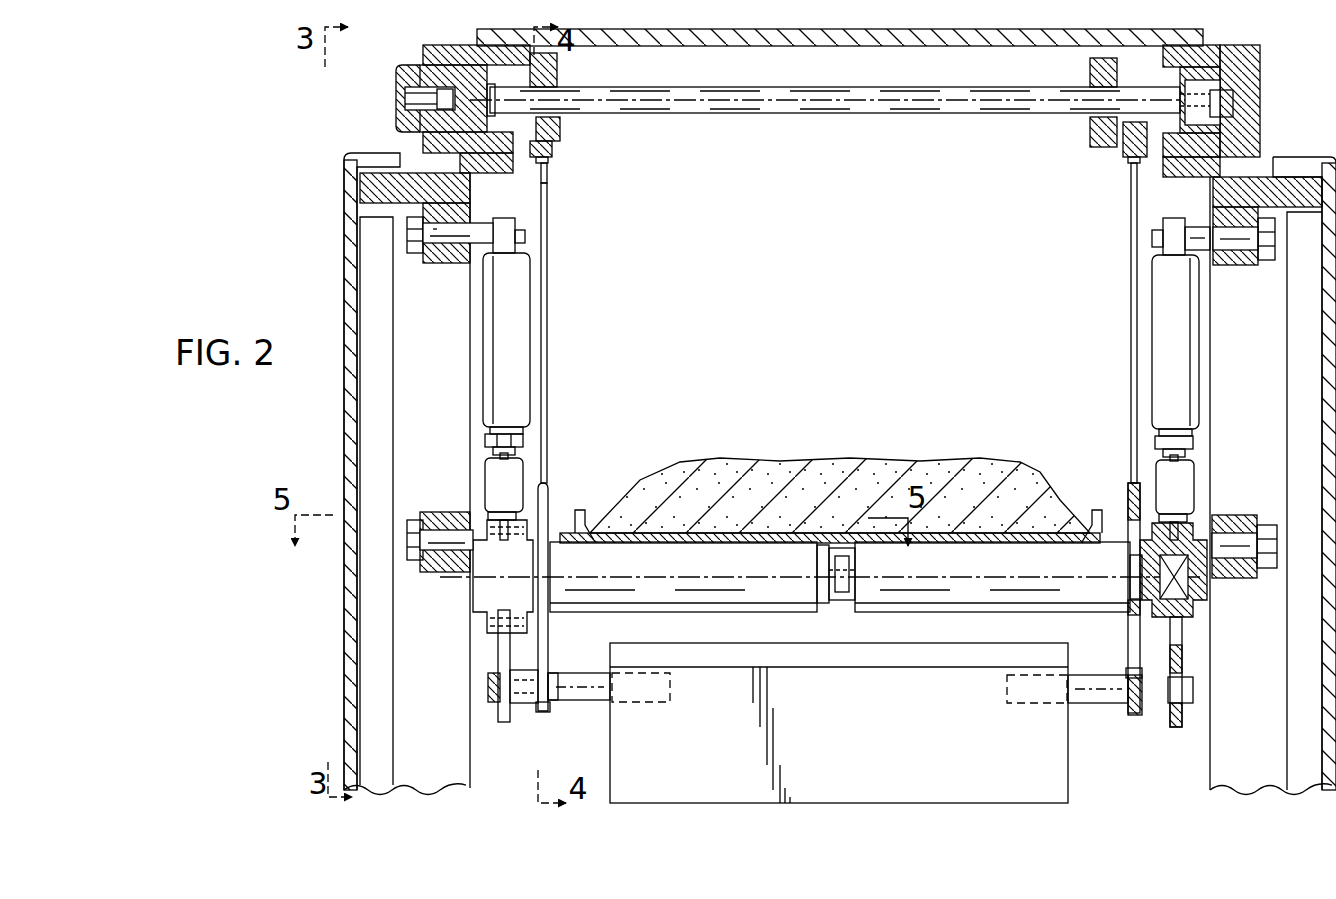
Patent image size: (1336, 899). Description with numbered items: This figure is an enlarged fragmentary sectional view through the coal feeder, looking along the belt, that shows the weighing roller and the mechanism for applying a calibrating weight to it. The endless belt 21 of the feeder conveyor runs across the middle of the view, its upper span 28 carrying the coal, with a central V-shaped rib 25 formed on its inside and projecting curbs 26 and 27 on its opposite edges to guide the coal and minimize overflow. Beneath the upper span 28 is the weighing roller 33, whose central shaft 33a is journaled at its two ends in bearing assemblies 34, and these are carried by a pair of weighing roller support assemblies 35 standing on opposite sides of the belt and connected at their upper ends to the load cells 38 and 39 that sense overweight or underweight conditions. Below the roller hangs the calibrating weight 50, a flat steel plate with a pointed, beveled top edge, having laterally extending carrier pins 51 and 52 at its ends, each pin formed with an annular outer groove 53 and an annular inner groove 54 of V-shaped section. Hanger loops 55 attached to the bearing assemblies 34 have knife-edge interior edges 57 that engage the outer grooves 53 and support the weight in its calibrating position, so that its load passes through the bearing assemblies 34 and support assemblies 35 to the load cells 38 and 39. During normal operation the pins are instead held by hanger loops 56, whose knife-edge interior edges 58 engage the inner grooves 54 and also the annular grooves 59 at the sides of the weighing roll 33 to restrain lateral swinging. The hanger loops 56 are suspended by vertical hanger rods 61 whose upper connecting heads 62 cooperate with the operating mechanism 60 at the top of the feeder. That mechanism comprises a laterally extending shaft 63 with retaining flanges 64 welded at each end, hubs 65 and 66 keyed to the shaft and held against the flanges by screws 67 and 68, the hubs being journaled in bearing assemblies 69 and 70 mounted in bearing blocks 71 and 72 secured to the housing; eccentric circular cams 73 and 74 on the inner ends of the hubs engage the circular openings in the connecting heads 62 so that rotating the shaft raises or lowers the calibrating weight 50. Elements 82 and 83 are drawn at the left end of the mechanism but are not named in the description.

The endless belt 21 is at (775, 542).
The central V-shaped rib 25 is at (856, 547).
The projecting curb 26 is at (580, 516).
The projecting curb 27 is at (1095, 522).
The upper span 28 is at (665, 531).
The weighing roller 33 is at (908, 602).
The central shaft 33a is at (1140, 575).
The bearing assembly 34 is at (490, 592).
The weighing roller support assembly 35 is at (490, 480).
The load cell 38 is at (515, 302).
The load cell 39 is at (1163, 320).
The calibrating weight 50 is at (1062, 782).
The carrier pin 51 is at (590, 701).
The carrier pin 52 is at (1075, 704).
The annular outer groove 53 is at (514, 680).
The annular inner groove 54 is at (545, 713).
The hanger loop 55 is at (498, 649).
The hanger loop 56 is at (549, 623).
The interior edge 57 is at (490, 706).
The interior edge 58 is at (554, 684).
The annular groove 59 is at (560, 544).
The operating mechanism 60 is at (410, 52).
The vertical hanger rod 61 is at (548, 345).
The connecting head 62 is at (548, 152).
The laterally extending shaft 63 is at (830, 114).
The retaining flange 64 is at (578, 78).
The hub 65 is at (492, 137).
The hub 66 is at (1180, 162).
The screw 67 is at (422, 120).
The screw 68 is at (1234, 103).
The bearing assembly 69 is at (522, 152).
The bearing assembly 70 is at (1245, 134).
The bearing block 71 is at (447, 152).
The bearing block 72 is at (1252, 75).
The eccentric circular cam 73 is at (578, 129).
The eccentric circular cam 74 is at (1090, 137).
The cap nut 82 is at (402, 100).
The locking element 83 is at (418, 82).